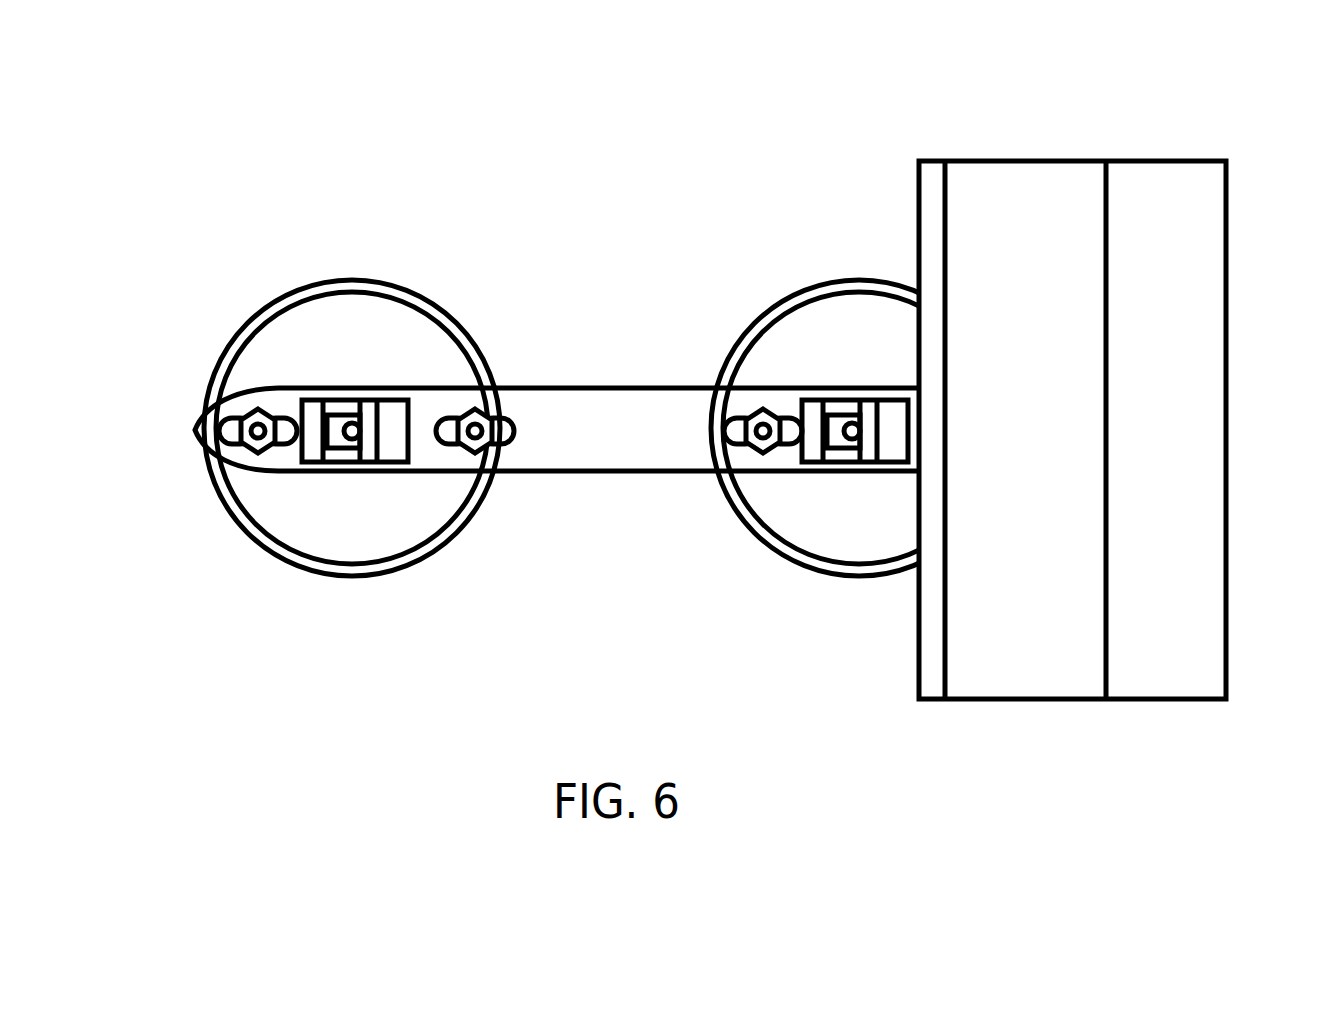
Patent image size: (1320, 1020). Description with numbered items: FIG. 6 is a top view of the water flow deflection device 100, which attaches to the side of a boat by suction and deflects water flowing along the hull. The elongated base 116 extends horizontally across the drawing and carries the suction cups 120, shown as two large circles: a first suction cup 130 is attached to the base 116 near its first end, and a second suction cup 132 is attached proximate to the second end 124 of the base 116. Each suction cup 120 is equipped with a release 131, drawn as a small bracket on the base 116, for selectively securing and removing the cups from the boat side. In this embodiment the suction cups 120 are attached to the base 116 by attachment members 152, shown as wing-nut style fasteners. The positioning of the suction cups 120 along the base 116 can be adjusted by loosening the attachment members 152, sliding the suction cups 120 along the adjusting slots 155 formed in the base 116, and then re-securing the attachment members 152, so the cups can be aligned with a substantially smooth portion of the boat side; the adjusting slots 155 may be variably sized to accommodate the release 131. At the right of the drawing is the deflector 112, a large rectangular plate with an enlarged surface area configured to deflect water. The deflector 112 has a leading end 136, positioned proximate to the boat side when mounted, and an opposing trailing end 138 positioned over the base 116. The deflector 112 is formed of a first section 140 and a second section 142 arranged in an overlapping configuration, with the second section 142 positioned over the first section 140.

The water flow deflection device 100 is at (292, 208).
The deflector 112 is at (1020, 720).
The elongated base 116 is at (572, 388).
The suction cups 120 is at (605, 482).
The second end 124 is at (224, 412).
The first suction cup 130 is at (790, 570).
The release 131 is at (382, 425).
The second suction cup 132 is at (300, 567).
The leading end 136 is at (1226, 160).
The trailing end 138 is at (932, 686).
The first section 140 is at (1148, 180).
The second section 142 is at (1050, 180).
The attachment members 152 is at (260, 409).
The adjusting slots 155 is at (224, 430).